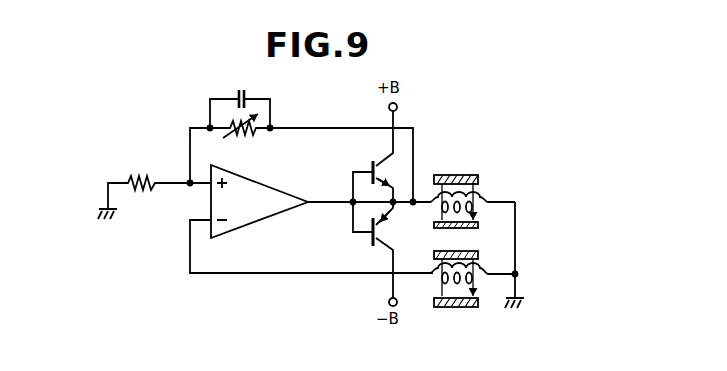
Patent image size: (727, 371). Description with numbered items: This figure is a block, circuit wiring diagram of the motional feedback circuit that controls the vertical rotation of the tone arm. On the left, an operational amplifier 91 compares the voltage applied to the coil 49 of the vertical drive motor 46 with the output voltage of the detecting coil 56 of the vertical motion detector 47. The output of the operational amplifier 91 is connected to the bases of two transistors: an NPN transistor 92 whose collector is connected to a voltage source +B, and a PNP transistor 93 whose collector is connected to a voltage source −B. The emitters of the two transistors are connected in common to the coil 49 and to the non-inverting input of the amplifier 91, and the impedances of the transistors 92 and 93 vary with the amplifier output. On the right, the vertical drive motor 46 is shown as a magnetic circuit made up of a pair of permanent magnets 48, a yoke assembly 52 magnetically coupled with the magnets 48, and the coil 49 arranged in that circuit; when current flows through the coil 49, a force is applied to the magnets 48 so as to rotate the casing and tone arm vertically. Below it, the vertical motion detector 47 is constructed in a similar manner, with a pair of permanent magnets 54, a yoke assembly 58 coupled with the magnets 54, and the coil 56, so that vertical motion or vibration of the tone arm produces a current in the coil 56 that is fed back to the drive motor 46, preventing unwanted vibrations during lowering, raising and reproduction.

The vertical drive motor 46 is at (484, 176).
The vertical motion detector 47 is at (484, 300).
The permanent magnets 48 is at (459, 175).
The coil 49 is at (483, 197).
The yoke assembly 52 is at (478, 225).
The permanent magnets 54 is at (460, 308).
The coil 56 is at (483, 270).
The yoke assembly 58 is at (478, 254).
The operational amplifier 91 is at (261, 207).
The NPN transistor 92 is at (383, 160).
The PNP transistor 93 is at (380, 246).